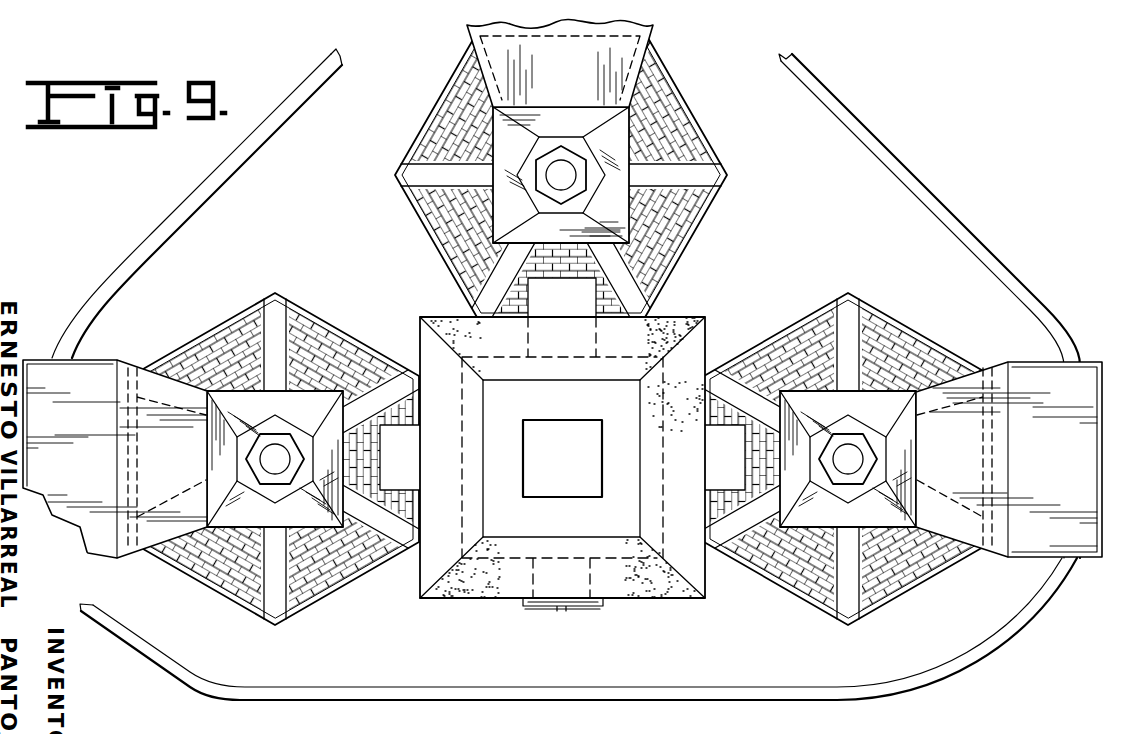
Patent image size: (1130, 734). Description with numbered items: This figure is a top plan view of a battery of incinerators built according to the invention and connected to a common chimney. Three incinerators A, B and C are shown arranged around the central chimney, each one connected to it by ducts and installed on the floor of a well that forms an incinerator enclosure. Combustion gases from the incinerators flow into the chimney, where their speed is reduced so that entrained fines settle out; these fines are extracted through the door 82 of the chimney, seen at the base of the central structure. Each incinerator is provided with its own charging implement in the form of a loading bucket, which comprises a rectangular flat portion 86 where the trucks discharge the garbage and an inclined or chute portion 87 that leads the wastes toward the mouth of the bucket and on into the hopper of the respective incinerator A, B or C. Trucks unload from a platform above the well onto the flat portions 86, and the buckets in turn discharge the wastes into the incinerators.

The door 82 is at (578, 611).
The rectangular flat portion 86 is at (83, 382).
The inclined or chute portion 87 is at (537, 69).
The incinerator A is at (316, 608).
The incinerator B is at (795, 597).
The incinerator C is at (726, 186).